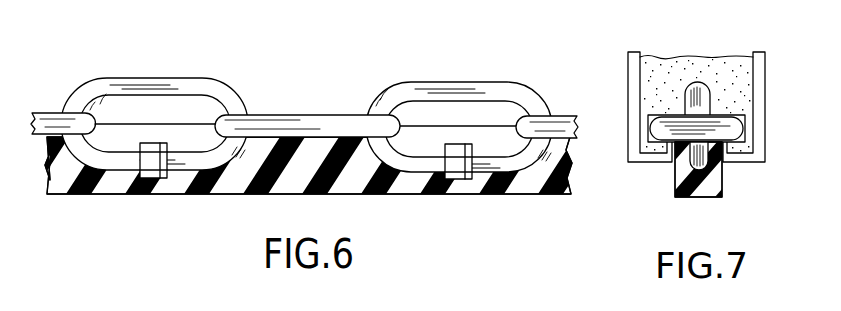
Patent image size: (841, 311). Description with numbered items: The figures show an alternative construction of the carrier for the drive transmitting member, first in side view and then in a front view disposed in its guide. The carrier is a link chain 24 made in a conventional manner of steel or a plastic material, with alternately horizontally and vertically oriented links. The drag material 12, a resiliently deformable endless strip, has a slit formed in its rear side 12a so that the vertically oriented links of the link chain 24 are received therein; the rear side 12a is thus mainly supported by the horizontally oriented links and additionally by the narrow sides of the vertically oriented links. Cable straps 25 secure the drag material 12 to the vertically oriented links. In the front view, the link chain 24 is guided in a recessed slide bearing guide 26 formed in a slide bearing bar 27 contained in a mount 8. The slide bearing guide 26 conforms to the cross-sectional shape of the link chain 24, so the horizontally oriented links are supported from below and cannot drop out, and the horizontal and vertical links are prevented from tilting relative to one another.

In FIG. 7, the mount 8 is at (635, 123).
In FIG. 6, the drag material 12 is at (102, 168).
In FIG. 7, the drag material 12 is at (703, 192).
In FIG. 7, the rear side 12a is at (723, 157).
In FIG. 6, the link chain 24 is at (195, 93).
In FIG. 7, the link chain 24 is at (688, 118).
In FIG. 6, the cable straps 25 is at (463, 172).
In FIG. 7, the slide bearing guide 26 is at (683, 82).
In FIG. 7, the slide bearing bar 27 is at (731, 82).